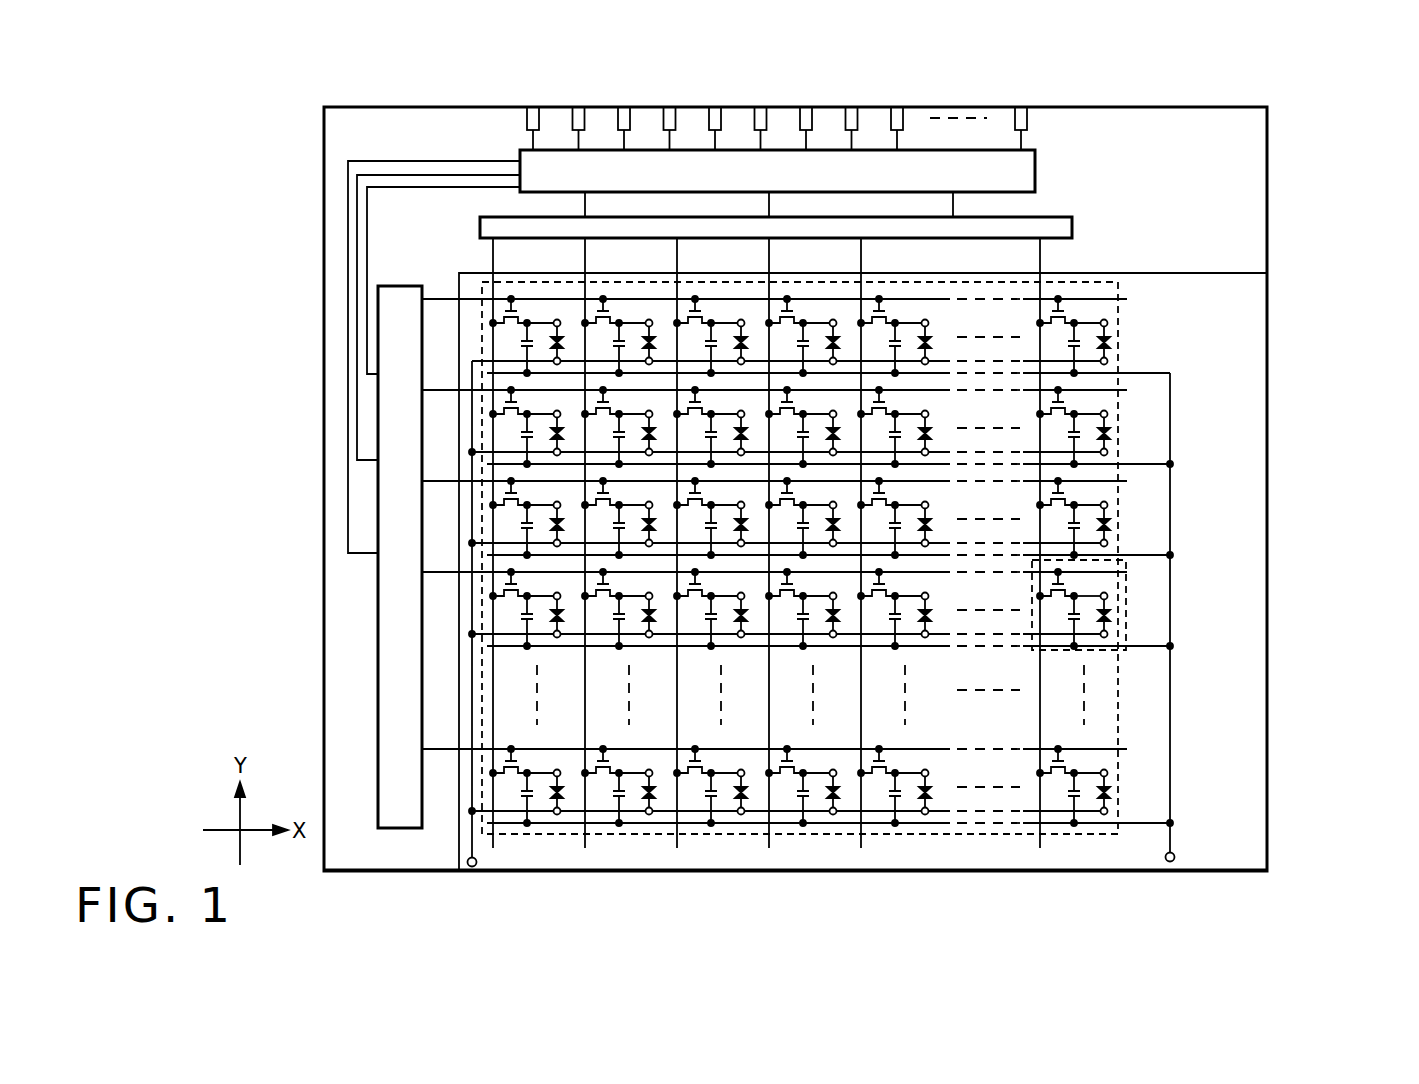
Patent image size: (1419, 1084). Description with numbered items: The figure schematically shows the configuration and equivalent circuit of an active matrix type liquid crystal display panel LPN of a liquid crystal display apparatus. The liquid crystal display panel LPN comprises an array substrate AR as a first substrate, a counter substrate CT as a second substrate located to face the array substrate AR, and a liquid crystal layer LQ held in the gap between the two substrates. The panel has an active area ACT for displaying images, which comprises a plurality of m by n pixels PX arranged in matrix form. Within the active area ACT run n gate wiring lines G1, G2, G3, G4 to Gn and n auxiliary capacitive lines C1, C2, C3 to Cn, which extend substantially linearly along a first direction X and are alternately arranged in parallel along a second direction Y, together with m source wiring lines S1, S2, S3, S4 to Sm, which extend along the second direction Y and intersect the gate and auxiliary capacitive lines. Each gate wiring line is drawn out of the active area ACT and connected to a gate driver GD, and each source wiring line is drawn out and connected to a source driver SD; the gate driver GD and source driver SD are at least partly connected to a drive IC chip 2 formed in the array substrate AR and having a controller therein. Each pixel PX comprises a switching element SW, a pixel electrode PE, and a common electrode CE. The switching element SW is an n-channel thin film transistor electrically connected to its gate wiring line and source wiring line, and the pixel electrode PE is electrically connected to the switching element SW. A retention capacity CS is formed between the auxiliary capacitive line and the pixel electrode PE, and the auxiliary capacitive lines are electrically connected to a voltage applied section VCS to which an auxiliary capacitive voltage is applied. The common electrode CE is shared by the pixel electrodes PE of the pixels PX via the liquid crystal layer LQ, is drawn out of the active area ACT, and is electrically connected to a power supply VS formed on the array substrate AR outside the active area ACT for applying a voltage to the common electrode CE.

The liquid crystal display panel LPN is at (1298, 121).
The drive IC chip 2 is at (1035, 150).
The source driver SD is at (1072, 226).
The gate driver GD is at (378, 678).
The counter substrate CT is at (1232, 273).
The array substrate AR is at (392, 860).
The active area ACT is at (1118, 403).
The pixel PX is at (1126, 648).
The gate wiring line G1 is at (438, 297).
The gate wiring line G2 is at (438, 388).
The gate wiring line G3 is at (438, 479).
The gate wiring line G4 is at (438, 570).
The gate wiring line Gn is at (438, 747).
The source wiring line S1 is at (497, 262).
The source wiring line S2 is at (589, 262).
The source wiring line S3 is at (681, 262).
The source wiring line S4 is at (773, 262).
The source wiring line Sm is at (1044, 262).
The auxiliary capacitive line C1 is at (1147, 370).
The auxiliary capacitive line C2 is at (1147, 461).
The auxiliary capacitive line C3 is at (1147, 552).
The auxiliary capacitive line Cn is at (1147, 820).
The switching element SW is at (1040, 582).
The retention capacity CS is at (1062, 612).
The pixel electrode PE is at (1107, 593).
The liquid crystal layer LQ is at (1110, 608).
The common electrode CE is at (1108, 632).
The power supply VS is at (477, 866).
The voltage applied section VCS is at (1174, 853).